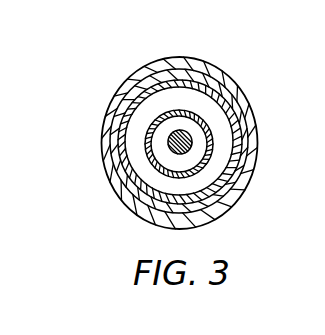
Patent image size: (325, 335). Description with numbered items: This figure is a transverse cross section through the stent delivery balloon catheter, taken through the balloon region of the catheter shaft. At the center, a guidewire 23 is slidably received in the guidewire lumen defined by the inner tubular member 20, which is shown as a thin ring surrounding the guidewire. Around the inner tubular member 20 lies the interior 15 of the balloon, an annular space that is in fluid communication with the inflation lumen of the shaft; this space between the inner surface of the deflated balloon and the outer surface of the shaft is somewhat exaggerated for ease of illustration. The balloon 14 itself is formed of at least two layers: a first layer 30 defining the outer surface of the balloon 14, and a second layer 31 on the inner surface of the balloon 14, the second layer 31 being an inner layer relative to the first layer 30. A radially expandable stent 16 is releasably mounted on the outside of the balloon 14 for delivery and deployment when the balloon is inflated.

The balloon 14 is at (128, 101).
The interior of the balloon 15 is at (143, 178).
The radially expandable stent 16 is at (150, 70).
The inner tubular member 20 is at (147, 151).
The guidewire 23 is at (180, 130).
The first layer 30 is at (234, 100).
The second layer 31 is at (233, 121).